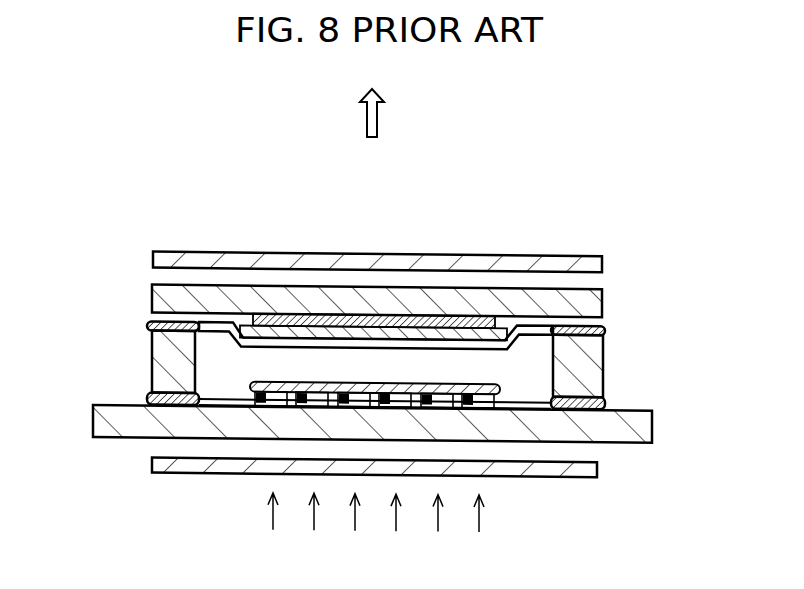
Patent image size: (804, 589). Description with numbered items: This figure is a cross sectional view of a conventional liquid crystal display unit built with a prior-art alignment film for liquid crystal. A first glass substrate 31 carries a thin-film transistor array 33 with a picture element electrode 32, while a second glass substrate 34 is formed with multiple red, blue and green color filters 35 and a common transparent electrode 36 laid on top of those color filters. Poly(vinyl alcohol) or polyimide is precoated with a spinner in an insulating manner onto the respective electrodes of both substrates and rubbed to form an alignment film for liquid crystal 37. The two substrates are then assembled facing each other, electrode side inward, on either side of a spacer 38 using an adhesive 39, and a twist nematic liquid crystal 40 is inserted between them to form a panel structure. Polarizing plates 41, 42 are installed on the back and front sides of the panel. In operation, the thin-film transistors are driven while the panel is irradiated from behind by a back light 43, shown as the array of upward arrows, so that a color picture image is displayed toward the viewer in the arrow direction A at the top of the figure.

The first glass substrate 31 is at (652, 420).
The picture element electrode 32 is at (488, 391).
The TFT array 33 is at (478, 398).
The second glass substrate 34 is at (152, 296).
The color filter 35 is at (287, 312).
The common transparent electrode 36 is at (148, 319).
The alignment film for liquid crystal 37 is at (507, 320).
The spacer 38 is at (158, 365).
The adhesive 39 is at (150, 330).
The twist nematic liquid crystal 40 is at (535, 334).
The polarizing plate 41 is at (152, 460).
The polarizing plate 42 is at (603, 254).
The back light 43 is at (482, 518).
The direction of picture image A is at (385, 97).